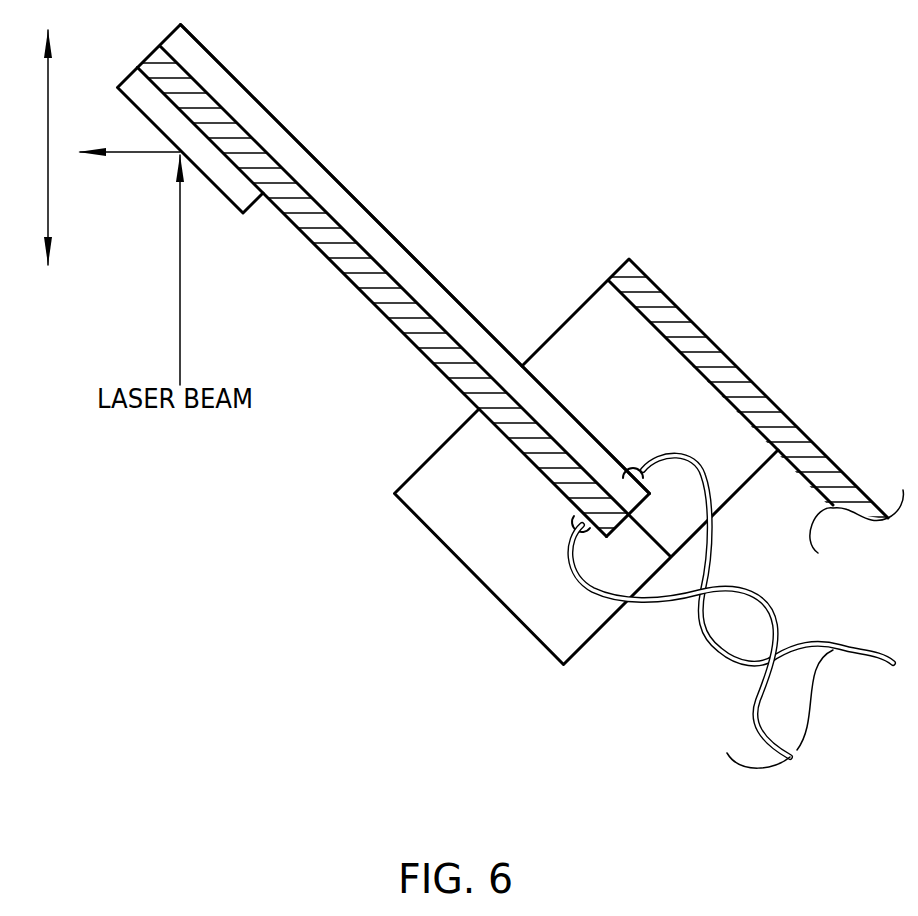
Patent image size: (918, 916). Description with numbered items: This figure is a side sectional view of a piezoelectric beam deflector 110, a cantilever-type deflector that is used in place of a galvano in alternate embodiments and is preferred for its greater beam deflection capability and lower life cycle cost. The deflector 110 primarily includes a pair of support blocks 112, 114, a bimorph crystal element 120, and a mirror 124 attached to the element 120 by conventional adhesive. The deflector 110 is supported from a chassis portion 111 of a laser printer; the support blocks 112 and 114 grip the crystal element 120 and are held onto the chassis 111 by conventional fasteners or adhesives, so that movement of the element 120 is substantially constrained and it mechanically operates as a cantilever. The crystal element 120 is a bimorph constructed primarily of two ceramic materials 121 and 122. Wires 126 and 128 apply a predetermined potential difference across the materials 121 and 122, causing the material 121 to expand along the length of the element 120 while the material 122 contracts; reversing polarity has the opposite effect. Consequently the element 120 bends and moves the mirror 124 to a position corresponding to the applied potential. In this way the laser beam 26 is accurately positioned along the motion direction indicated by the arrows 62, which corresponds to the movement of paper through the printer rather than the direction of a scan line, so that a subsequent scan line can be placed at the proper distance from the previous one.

The piezoelectric beam deflector 110 is at (600, 92).
The bimorph crystal element 120 is at (215, 84).
The ceramic material 121 is at (414, 258).
The ceramic material 122 is at (366, 294).
The mirror 124 is at (116, 88).
The support block 114 is at (577, 309).
The support block 112 is at (480, 579).
The chassis portion 111 is at (853, 483).
The wire 126 is at (778, 628).
The wire 128 is at (710, 637).
The laser beam 26 is at (133, 152).
The arrows indicating motion direction 62 is at (52, 183).